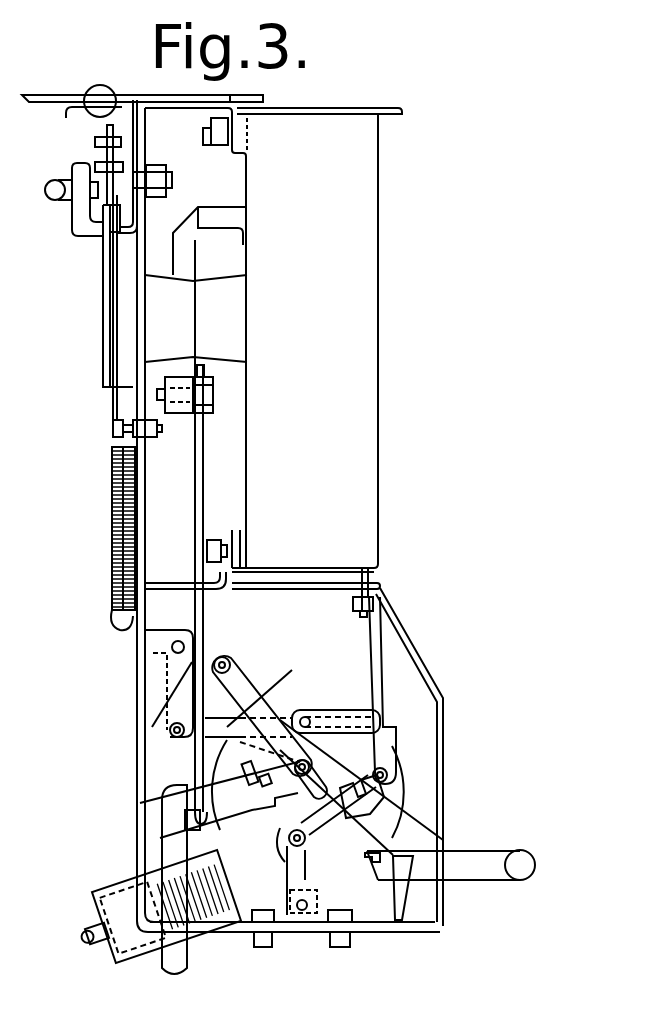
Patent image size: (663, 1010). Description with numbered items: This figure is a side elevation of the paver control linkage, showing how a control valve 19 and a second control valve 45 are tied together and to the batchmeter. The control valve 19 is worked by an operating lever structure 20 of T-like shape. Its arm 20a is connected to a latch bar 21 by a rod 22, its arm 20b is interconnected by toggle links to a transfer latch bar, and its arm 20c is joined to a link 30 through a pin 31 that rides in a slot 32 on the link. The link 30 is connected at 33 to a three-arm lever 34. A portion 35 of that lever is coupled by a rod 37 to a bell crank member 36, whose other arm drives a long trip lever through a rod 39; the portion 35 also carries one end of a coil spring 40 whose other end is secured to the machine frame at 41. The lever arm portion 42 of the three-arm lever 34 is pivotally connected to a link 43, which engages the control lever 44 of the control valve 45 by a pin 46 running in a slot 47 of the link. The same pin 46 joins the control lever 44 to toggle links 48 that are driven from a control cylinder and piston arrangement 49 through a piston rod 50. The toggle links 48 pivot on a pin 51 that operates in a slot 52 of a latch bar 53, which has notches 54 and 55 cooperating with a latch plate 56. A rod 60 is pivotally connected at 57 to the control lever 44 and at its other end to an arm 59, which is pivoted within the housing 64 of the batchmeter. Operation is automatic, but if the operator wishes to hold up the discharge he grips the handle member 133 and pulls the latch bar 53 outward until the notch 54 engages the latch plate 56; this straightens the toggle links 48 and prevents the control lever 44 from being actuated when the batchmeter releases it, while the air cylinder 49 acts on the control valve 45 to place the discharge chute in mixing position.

The control valve 19 is at (407, 787).
The operating lever structure 20 is at (392, 816).
The arm 20a is at (395, 745).
The arm 20b is at (398, 930).
The arm 20c is at (320, 730).
The latch bar 21 is at (365, 583).
The rod 22 is at (383, 667).
The link 30 is at (242, 702).
The pin 31 is at (305, 718).
The slot 32 is at (388, 717).
The connection 33 is at (167, 737).
The three-arm lever 34 is at (167, 699).
The portion 35 is at (133, 617).
The bell crank member 36 is at (107, 152).
The rod 37 is at (113, 403).
The rod 39 is at (95, 142).
The coil spring 40 is at (112, 535).
The frame attachment 41 is at (117, 437).
The lever arm portion 42 is at (214, 663).
The link 43 is at (273, 687).
The control lever 44 is at (250, 832).
The control valve 45 is at (223, 765).
The pin 46 is at (398, 714).
The slot 47 is at (400, 727).
The toggle links 48 is at (315, 893).
The control cylinder and piston arrangement 49 is at (133, 963).
The piston rod 50 is at (231, 930).
The pin 51 is at (288, 930).
The slot 52 is at (215, 832).
The latch bar 53 is at (481, 880).
The notch 54 is at (381, 852).
The notch 55 is at (442, 912).
The latch plate 56 is at (372, 930).
The pivot 57 is at (187, 812).
The arm 59 is at (200, 396).
The rod 60 is at (200, 468).
The housing 64 is at (380, 386).
The handle member 133 is at (535, 867).